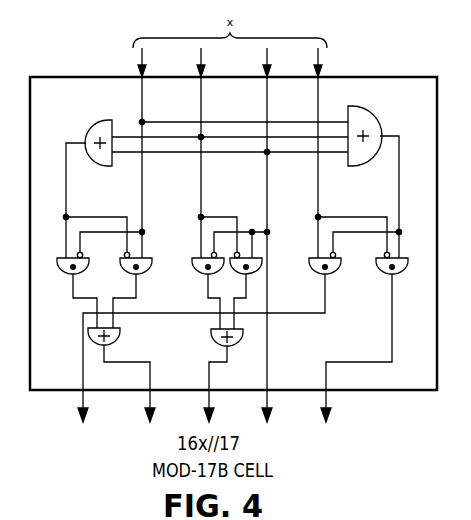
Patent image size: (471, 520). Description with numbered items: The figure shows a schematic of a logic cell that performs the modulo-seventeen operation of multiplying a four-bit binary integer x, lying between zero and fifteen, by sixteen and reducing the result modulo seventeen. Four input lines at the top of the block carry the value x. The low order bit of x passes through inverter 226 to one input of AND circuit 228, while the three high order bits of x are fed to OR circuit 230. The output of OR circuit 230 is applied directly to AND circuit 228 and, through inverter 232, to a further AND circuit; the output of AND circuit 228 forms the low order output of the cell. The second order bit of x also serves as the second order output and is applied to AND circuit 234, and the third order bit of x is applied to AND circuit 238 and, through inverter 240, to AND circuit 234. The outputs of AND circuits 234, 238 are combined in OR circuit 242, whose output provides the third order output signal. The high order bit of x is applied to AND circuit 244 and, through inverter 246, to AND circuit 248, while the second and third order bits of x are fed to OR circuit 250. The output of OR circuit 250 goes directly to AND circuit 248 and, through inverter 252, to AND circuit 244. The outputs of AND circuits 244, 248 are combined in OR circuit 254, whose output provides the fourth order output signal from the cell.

The inverter 226 is at (387, 252).
The AND circuit 228 is at (386, 277).
The OR circuit 230 is at (372, 119).
The inverter 232 is at (333, 252).
The AND circuit 234 is at (258, 276).
The AND circuit 238 is at (198, 277).
The inverter 240 is at (238, 252).
The OR circuit 242 is at (237, 345).
The AND circuit 244 is at (128, 277).
The inverter 246 is at (80, 252).
The AND circuit 248 is at (70, 277).
The OR circuit 250 is at (105, 121).
The inverter 252 is at (127, 252).
The OR circuit 254 is at (122, 331).